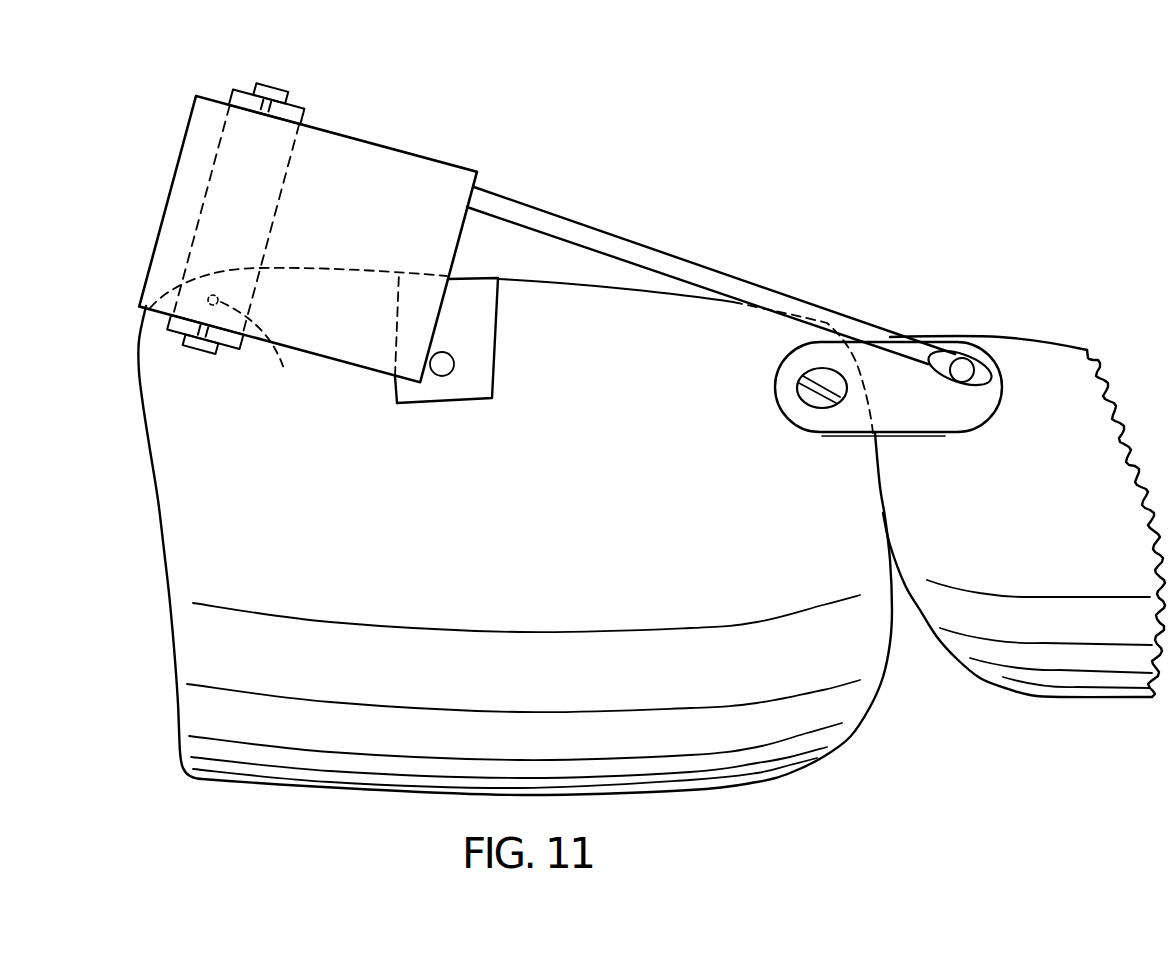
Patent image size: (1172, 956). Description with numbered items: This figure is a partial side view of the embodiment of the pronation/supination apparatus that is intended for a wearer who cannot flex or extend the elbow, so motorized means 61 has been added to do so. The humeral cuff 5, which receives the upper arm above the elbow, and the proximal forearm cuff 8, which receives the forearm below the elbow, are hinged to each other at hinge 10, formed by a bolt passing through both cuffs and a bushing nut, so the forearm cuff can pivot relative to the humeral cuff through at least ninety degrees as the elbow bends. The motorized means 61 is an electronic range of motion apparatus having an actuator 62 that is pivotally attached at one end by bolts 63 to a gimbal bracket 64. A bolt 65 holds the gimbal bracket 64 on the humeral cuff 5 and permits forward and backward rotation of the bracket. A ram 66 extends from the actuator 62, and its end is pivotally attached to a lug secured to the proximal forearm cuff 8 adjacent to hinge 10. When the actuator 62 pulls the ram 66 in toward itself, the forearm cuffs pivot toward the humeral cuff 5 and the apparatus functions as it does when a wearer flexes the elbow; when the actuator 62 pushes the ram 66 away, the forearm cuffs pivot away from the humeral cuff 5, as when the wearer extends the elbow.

The humeral cuff 5 is at (687, 767).
The proximal forearm cuff 8 is at (1077, 678).
The hinge 10 is at (807, 393).
The motorized means 61 is at (566, 244).
The actuator 62 is at (163, 221).
The bolts 63 is at (277, 88).
The gimbal bracket 64 is at (242, 88).
The bolt 65 is at (261, 346).
The ram 66 is at (658, 258).